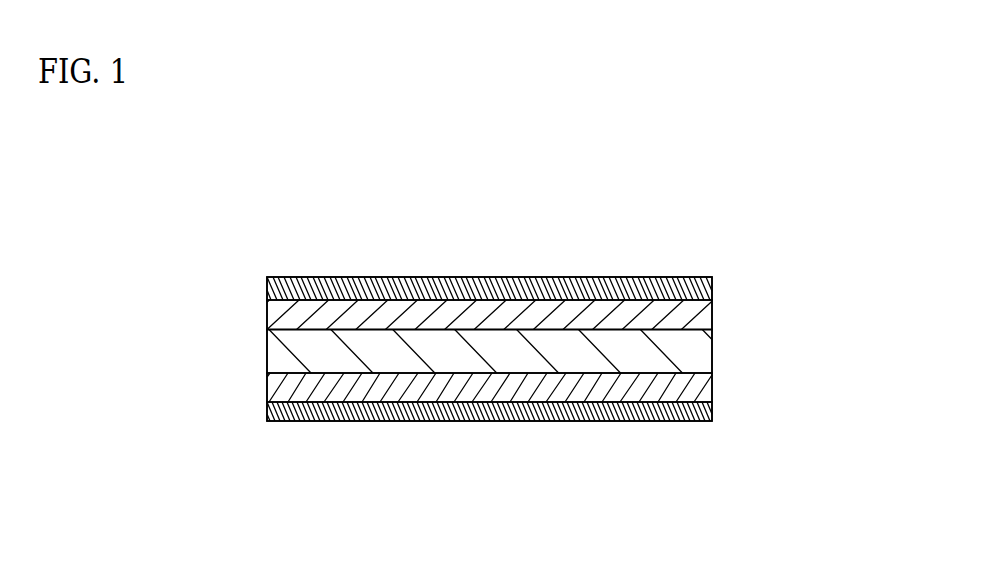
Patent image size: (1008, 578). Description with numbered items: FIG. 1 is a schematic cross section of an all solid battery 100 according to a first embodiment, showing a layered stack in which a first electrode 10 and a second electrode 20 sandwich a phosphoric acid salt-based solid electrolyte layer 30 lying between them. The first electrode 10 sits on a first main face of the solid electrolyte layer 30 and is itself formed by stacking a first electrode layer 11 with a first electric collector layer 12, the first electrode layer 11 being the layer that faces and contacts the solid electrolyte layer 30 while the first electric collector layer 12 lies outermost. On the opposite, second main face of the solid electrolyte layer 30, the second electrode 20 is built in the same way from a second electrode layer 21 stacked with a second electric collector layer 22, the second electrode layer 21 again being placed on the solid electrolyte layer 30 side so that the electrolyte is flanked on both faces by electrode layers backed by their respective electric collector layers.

The all solid battery 100 is at (884, 196).
The second electrode 20 is at (565, 302).
The second electric collector layer 22 is at (712, 281).
The second electrode layer 21 is at (535, 316).
The solid electrolyte layer 30 is at (274, 366).
The first electrode 10 is at (565, 399).
The first electrode layer 11 is at (704, 386).
The first electric collector layer 12 is at (704, 413).